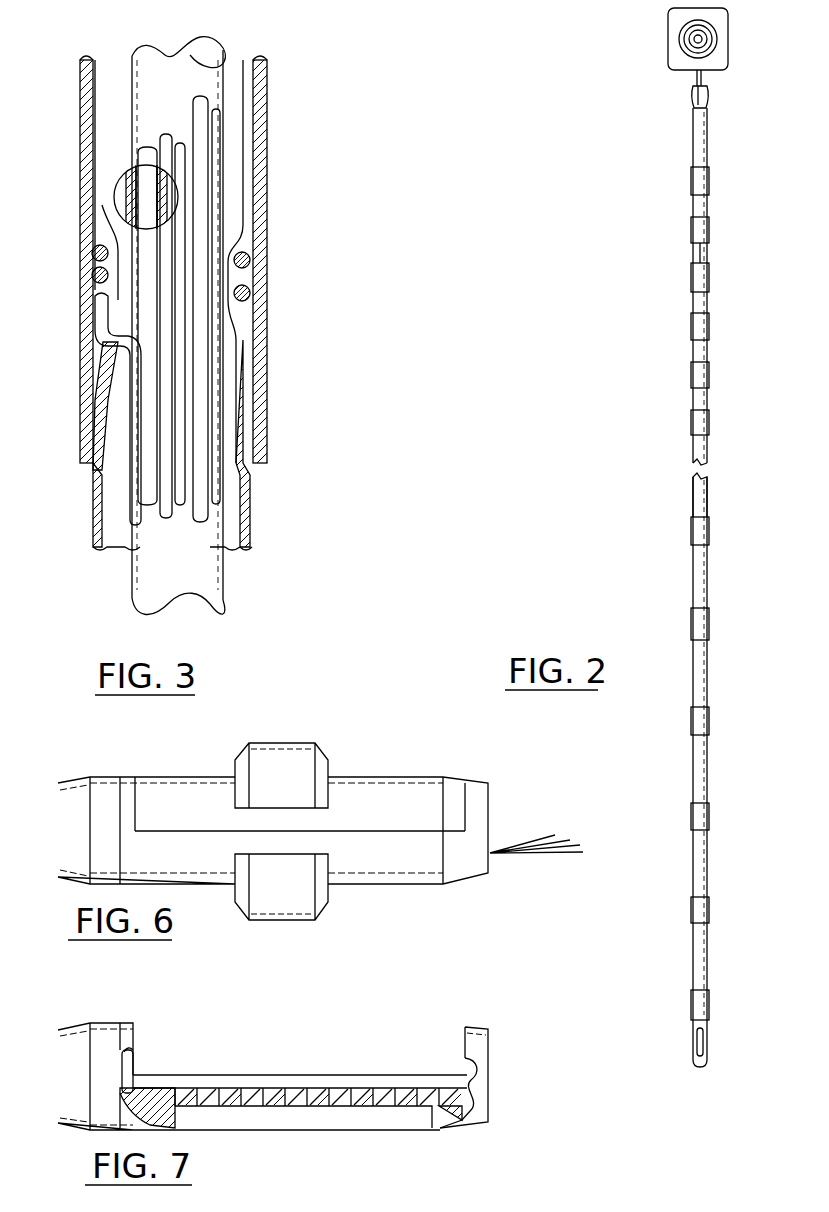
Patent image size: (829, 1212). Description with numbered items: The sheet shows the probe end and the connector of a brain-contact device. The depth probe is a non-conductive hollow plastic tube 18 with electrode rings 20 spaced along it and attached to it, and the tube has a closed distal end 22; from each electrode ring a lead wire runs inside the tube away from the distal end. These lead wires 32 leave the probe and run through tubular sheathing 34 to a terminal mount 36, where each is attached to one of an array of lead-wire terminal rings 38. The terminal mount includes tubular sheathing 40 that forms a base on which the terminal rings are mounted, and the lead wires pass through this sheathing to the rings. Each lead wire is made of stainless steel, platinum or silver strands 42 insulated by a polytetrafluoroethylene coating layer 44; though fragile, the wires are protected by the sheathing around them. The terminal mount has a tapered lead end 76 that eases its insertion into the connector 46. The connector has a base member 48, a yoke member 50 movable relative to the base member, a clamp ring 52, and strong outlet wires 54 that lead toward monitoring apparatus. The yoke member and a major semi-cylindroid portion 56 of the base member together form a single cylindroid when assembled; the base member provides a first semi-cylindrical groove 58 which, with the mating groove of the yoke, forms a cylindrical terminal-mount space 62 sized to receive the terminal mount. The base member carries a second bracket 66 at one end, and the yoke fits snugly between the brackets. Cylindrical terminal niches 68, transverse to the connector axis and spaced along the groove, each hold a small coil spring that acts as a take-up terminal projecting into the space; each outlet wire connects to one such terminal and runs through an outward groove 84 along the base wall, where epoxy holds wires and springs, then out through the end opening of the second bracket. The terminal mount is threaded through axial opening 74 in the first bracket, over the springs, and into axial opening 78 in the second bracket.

In FIG. 2, the hollow plastic tube 18 is at (693, 767).
In FIG. 2, the electrode rings 20 is at (709, 719).
In FIG. 2, the closed distal end 22 is at (708, 1064).
In FIG. 3, the lead wires 32 is at (205, 127).
In FIG. 2, the tubular sheathing 34 is at (697, 493).
In FIG. 3, the terminal mount 36 is at (251, 492).
In FIG. 2, the terminal mount 36 is at (700, 254).
In FIG. 3, the lead-wire terminal rings 38 is at (258, 322).
In FIG. 2, the lead-wire terminal rings 38 is at (693, 231).
In FIG. 3, the tubular sheathing 40 is at (251, 527).
In FIG. 2, the tubular sheathing 40 is at (702, 398).
In FIG. 3, the strands 42 is at (145, 188).
In FIG. 3, the coating layer 44 is at (131, 203).
In FIG. 6, the connector 46 is at (320, 818).
In FIG. 7, the base member 48 is at (113, 1004).
In FIG. 6, the yoke member 50 is at (203, 782).
In FIG. 6, the clamp ring 52 is at (292, 752).
In FIG. 6, the outlet wires 54 is at (518, 864).
In FIG. 6, the semi-cylindroid portion 56 is at (365, 880).
In FIG. 7, the first semi-cylindrical groove 58 is at (160, 1085).
In FIG. 7, the terminal-mount space 62 is at (300, 1066).
In FIG. 7, the second bracket 66 is at (481, 1042).
In FIG. 7, the terminal niches 68 is at (280, 1095).
In FIG. 7, the axial opening 74 is at (131, 1067).
In FIG. 2, the tapered lead end 76 is at (708, 99).
In FIG. 7, the axial opening 78 is at (470, 1072).
In FIG. 7, the outward groove 84 is at (232, 1120).